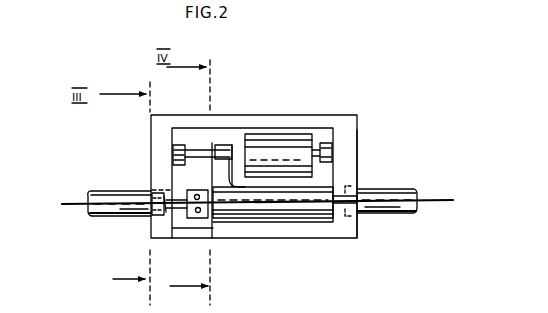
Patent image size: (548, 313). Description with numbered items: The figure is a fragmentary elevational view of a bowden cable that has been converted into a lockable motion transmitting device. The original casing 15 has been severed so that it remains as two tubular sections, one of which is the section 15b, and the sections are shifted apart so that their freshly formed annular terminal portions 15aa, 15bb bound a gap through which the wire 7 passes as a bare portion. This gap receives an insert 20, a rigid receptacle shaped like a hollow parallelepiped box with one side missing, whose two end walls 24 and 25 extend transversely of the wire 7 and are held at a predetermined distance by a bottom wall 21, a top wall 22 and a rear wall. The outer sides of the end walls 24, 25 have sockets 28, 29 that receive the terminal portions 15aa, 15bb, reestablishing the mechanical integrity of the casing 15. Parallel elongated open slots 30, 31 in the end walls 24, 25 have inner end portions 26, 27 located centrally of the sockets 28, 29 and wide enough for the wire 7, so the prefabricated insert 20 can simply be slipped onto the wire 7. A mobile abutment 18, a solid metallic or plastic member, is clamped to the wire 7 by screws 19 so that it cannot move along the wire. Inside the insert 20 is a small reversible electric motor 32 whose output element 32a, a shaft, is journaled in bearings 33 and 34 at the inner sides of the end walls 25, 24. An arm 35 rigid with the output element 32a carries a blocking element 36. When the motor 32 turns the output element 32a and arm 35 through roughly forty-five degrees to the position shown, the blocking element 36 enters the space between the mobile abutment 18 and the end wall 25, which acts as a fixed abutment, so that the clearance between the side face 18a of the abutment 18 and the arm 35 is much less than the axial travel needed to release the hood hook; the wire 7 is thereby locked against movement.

The wire 7 is at (74, 202).
The casing 15 is at (116, 214).
The annular terminal portion 15aa is at (147, 215).
The tubular section 15b is at (400, 188).
The annular terminal portion 15bb is at (372, 214).
The mobile abutment 18 is at (173, 229).
The side face 18a is at (196, 189).
The screws 19 is at (194, 193).
The insert 20 is at (179, 96).
The bottom wall 21 is at (212, 238).
The top wall 22 is at (323, 118).
The end wall 24 is at (154, 182).
The end wall 25 is at (358, 162).
The inner end portion 26 is at (195, 211).
The inner end portion 27 is at (333, 207).
The socket 28 is at (167, 214).
The socket 29 is at (348, 212).
The open slot 30 is at (151, 191).
The open slot 31 is at (370, 189).
The reversible electric motor 32 is at (272, 148).
The output element 32a is at (213, 146).
The journal bearing 33 is at (335, 147).
The journal bearing 34 is at (176, 155).
The arm 35 is at (232, 150).
The blocking element 36 is at (305, 205).